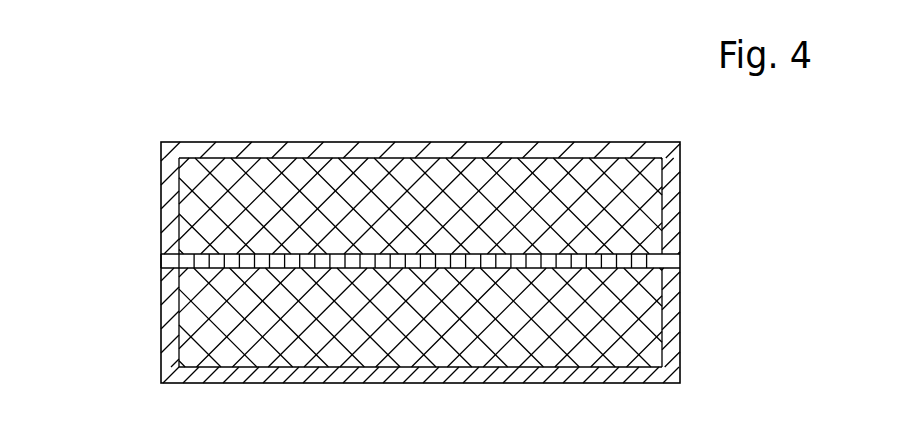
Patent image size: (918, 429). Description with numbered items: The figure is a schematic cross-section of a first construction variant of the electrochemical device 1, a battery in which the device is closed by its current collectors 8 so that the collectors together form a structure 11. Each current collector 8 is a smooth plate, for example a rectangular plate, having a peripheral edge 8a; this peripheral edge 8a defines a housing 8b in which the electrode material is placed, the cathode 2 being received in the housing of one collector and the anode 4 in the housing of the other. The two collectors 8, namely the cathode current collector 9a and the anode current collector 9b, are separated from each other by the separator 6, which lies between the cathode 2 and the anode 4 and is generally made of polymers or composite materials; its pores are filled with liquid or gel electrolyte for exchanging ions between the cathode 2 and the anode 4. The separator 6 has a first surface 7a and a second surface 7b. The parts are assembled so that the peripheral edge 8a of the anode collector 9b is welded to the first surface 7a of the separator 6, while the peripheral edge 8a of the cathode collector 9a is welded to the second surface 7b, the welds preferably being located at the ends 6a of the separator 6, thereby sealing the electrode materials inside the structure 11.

The electrochemical device 1 is at (358, 207).
The cathode 2 is at (225, 200).
The anode 4 is at (225, 322).
The separator 6 is at (416, 265).
The ends of separator 6a is at (176, 267).
The first surface of separator 7a is at (637, 248).
The second surface of separator 7b is at (619, 275).
The current collector 8 is at (388, 241).
The peripheral edge 8a is at (166, 166).
The housing 8b is at (381, 234).
The cathode current collector 9a is at (221, 150).
The anode current collector 9b is at (240, 373).
The structure 11 is at (158, 140).